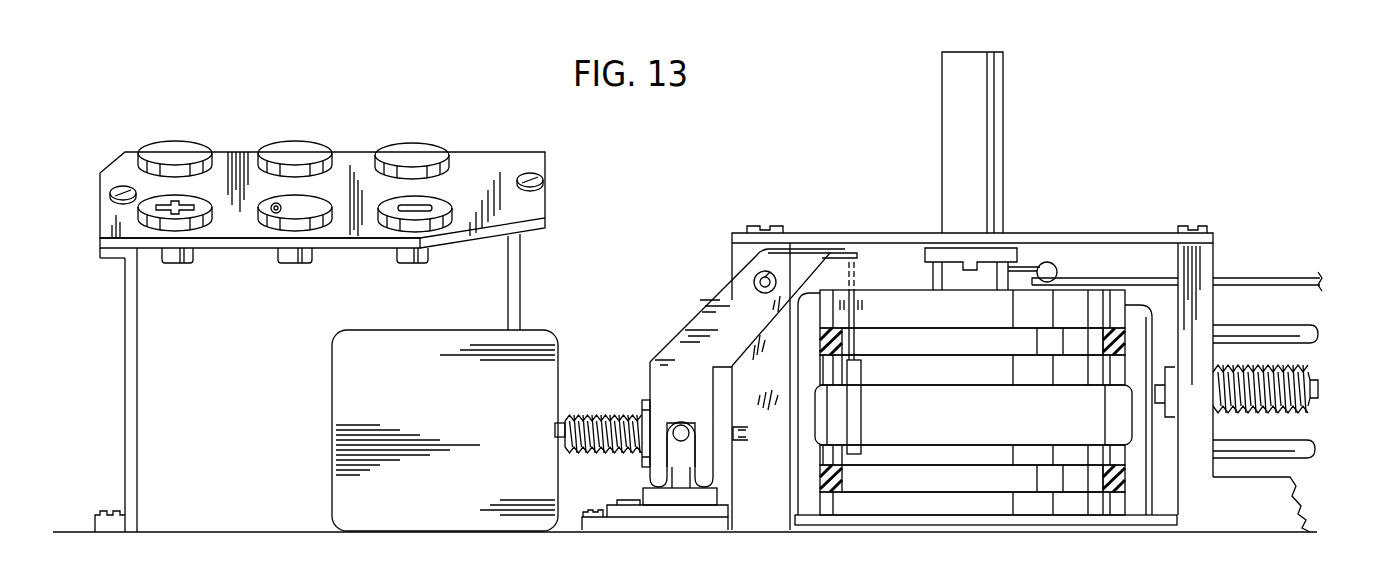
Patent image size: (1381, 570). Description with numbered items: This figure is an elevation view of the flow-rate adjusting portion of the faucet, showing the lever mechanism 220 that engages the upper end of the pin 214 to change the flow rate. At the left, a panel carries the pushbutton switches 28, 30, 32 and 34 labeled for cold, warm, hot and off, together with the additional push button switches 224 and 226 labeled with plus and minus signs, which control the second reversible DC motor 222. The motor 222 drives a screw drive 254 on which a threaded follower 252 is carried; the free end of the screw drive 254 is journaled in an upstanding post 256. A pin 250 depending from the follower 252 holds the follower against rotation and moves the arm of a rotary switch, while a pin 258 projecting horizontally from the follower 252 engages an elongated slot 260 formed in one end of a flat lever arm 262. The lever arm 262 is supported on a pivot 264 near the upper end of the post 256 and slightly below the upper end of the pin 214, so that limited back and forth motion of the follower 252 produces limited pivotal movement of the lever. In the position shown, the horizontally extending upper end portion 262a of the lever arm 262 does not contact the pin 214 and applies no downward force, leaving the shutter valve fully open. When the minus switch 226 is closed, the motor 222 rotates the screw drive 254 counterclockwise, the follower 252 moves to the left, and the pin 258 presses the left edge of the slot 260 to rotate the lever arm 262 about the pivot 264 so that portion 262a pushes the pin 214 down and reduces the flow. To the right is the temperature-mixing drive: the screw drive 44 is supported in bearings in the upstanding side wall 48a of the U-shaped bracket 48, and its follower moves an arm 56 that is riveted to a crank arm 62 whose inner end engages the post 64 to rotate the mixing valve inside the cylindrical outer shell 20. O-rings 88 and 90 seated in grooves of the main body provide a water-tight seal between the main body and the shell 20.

The cylindrical outer shell 20 is at (1137, 505).
The pushbutton switch 28 is at (196, 141).
The pushbutton switch 30 is at (300, 141).
The pushbutton switch 32 is at (411, 143).
The pushbutton switch 34 is at (275, 222).
The screw drive 44 is at (1312, 390).
The U-shaped bracket 48 is at (1248, 517).
The upstanding side wall 48a is at (1207, 258).
The arm 56 is at (1120, 278).
The crank arm 62 is at (1058, 267).
The post 64 is at (998, 137).
The O-ring 88 is at (822, 347).
The O-ring 90 is at (832, 480).
The pin 214 is at (858, 275).
The lever mechanism 220 is at (648, 330).
The second reversible DC motor 222 is at (450, 399).
The push button switch 224 is at (140, 208).
The push button switch 226 is at (442, 226).
The pin 250 is at (680, 490).
The threaded follower 252 is at (648, 402).
The screw drive 254 is at (600, 449).
The upstanding post 256 is at (742, 255).
The pin 258 is at (681, 426).
The elongated slot 260 is at (688, 461).
The flat lever arm 262 is at (665, 368).
The horizontally extending upper end portion 262a is at (846, 251).
The pivot 264 is at (752, 286).